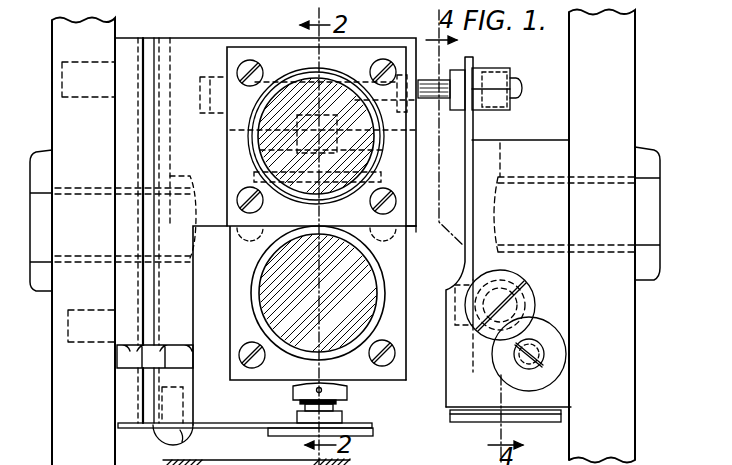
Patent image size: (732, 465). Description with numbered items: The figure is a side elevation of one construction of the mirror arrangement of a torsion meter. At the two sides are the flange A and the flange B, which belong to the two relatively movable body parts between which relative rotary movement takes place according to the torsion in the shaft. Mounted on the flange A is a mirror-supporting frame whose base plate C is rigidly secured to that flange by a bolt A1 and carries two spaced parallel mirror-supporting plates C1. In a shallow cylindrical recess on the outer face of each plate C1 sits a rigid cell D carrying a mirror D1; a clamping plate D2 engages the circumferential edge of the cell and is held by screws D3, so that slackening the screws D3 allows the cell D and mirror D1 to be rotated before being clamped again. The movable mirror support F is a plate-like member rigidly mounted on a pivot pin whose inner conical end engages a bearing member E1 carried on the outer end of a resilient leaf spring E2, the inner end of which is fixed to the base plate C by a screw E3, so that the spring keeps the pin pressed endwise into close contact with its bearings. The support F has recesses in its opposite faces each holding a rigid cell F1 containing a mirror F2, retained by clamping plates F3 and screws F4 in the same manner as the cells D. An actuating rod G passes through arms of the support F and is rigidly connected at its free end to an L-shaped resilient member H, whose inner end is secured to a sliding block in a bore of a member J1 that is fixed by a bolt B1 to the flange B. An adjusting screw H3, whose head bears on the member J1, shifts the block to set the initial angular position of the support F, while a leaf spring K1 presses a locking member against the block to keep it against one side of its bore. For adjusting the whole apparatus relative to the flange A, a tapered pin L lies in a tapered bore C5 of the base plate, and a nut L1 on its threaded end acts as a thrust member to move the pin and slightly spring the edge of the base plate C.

The flange A is at (75, 409).
The bolt A1 is at (43, 173).
The flange B is at (616, 413).
The bolt B1 is at (676, 96).
The base plate C is at (182, 289).
The mirror-supporting plates C1 is at (386, 4).
The tapered bore C5 is at (147, 55).
The cell D is at (294, 80).
The mirror D1 is at (297, 70).
The clamping plate D2 is at (264, 57).
The screws D3 is at (240, 72).
The bearing member E1 is at (409, 392).
The leaf spring E2 is at (247, 423).
The screw E3 is at (170, 435).
The mirror support F is at (336, 390).
The cell F1 is at (441, 245).
The mirror F2 is at (385, 300).
The clamping plates F3 is at (391, 245).
The screws F4 is at (243, 240).
The actuating rod G is at (443, 82).
The L-shaped resilient member H is at (473, 123).
The adjusting screw H3 is at (472, 334).
The member J1 is at (545, 92).
The leaf spring K1 is at (490, 418).
The tapered pin L is at (147, 162).
The nut L1 is at (137, 360).